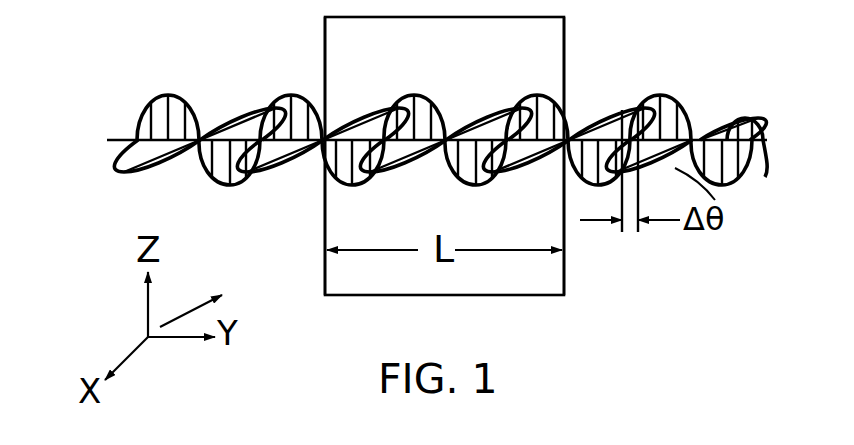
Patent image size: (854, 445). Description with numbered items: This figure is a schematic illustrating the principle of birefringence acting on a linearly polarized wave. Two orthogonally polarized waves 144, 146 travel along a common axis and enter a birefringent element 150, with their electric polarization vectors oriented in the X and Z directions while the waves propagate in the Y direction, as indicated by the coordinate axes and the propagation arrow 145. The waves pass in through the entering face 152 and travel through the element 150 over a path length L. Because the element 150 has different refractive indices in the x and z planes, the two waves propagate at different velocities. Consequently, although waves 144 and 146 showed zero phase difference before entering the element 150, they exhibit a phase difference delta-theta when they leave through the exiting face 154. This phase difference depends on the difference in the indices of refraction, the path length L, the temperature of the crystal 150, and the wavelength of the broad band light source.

The orthogonally polarized wave 144 is at (138, 103).
The orthogonally polarized wave 146 is at (177, 186).
The propagation direction 145 is at (191, 307).
The birefringent element 150 is at (564, 262).
The entering face 152 is at (325, 38).
The exiting face 154 is at (565, 80).